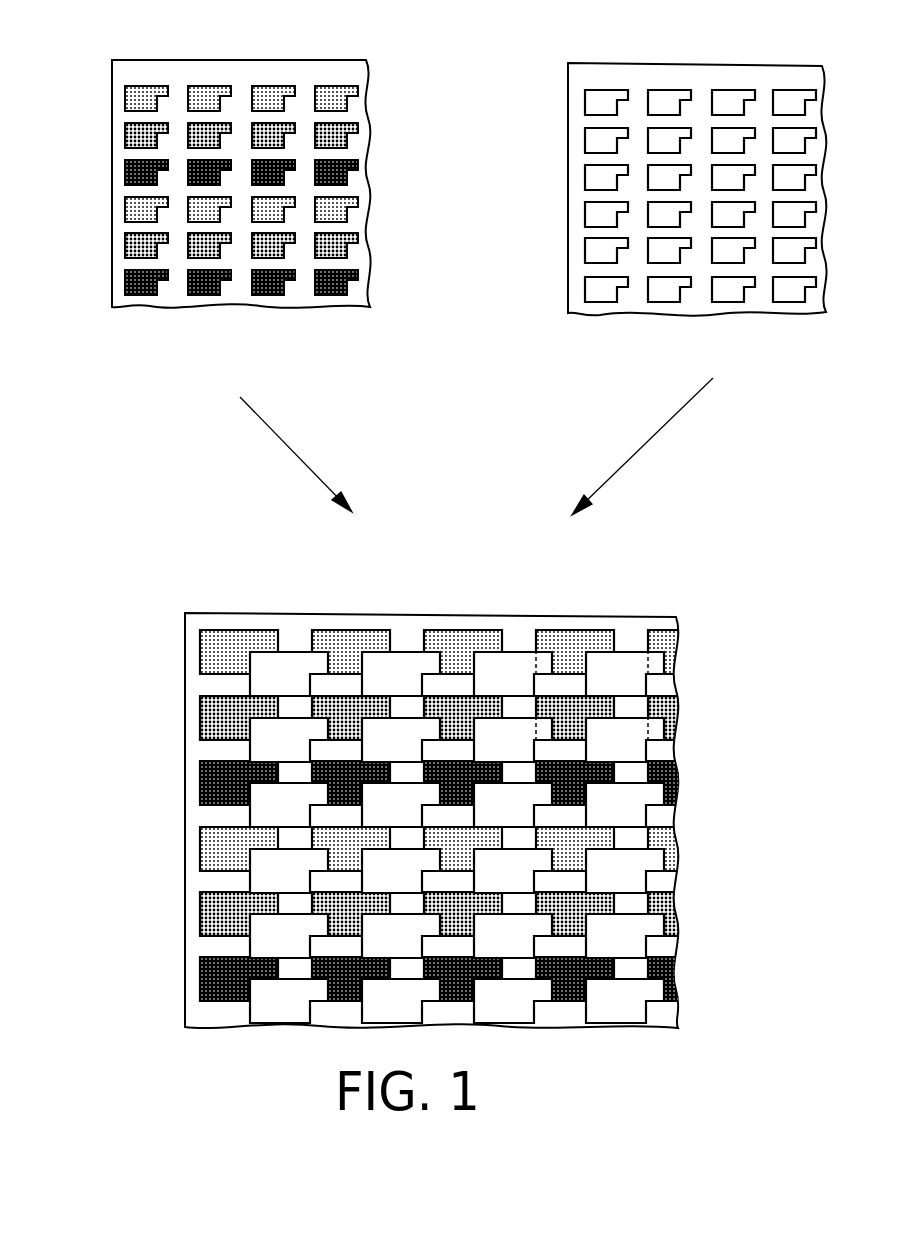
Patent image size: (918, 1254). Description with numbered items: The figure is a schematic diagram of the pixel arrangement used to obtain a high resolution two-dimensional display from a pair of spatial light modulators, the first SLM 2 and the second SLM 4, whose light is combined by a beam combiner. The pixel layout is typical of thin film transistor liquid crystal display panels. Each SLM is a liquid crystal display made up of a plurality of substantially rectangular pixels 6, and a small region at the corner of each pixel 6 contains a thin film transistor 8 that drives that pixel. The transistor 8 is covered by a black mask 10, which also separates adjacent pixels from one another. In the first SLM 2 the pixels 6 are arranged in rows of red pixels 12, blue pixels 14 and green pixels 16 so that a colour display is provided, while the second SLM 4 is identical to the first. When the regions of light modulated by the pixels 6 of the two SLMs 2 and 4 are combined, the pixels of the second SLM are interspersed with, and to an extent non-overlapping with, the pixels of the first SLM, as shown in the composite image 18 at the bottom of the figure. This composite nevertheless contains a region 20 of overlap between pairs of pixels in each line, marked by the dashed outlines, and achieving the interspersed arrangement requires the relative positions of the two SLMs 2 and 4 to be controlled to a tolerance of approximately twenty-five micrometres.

The first spatial light modulator 2 is at (195, 197).
The second spatial light modulator 4 is at (762, 318).
The pixel 6 is at (266, 292).
The thin film transistor 8 is at (350, 292).
The black mask 10 is at (182, 82).
The red pixels 12 is at (130, 99).
The blue pixels 14 is at (130, 136).
The green pixels 16 is at (127, 172).
The combined color filter structure 18 is at (489, 790).
The composite image / region of overlap 20 is at (650, 735).